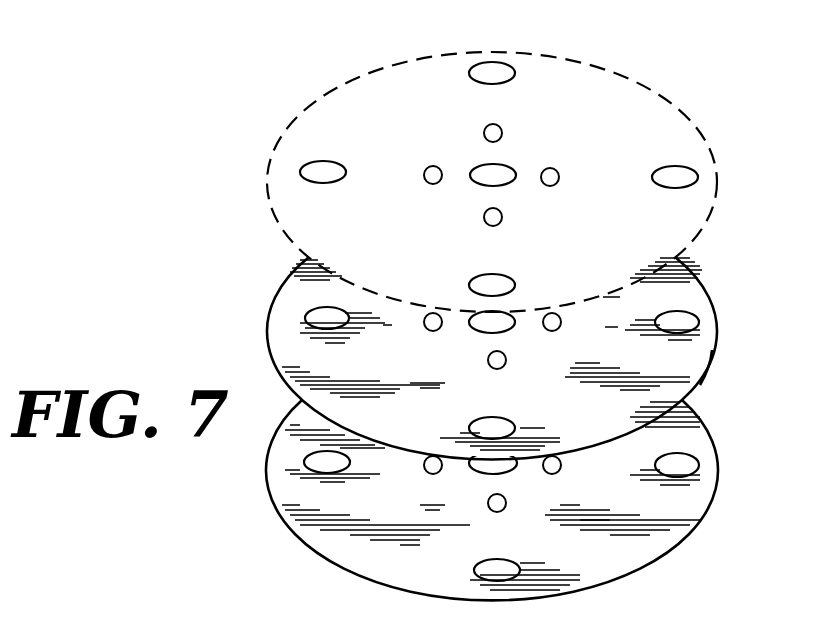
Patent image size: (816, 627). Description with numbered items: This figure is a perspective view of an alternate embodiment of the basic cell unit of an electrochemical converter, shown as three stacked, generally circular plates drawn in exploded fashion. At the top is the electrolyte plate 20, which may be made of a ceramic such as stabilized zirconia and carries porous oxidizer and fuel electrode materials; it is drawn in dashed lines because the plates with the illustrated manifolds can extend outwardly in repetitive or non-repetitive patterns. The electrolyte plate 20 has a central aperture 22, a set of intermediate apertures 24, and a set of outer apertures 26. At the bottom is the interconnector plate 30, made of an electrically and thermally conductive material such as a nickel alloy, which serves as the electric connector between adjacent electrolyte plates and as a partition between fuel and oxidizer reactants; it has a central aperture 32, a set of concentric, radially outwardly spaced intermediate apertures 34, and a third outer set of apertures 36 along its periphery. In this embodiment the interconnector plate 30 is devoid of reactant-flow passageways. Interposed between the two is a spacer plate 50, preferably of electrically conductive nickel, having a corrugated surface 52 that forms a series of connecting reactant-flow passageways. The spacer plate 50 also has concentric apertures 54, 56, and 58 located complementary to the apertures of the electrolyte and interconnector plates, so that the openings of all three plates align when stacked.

The electrolyte plate 20 is at (667, 86).
The central aperture 22 is at (499, 173).
The intermediate apertures 24 is at (553, 173).
The outer apertures 26 is at (488, 68).
The interconnector plate 30 is at (728, 449).
The central aperture 32 is at (504, 471).
The intermediate apertures 34 is at (430, 471).
The outer apertures 36 is at (490, 568).
The spacer plate 50 is at (726, 322).
The corrugated surface 52 is at (707, 367).
The central aperture of spacer plate 54 is at (482, 325).
The intermediate apertures of spacer plate 56 is at (506, 360).
The outer apertures of spacer plate 58 is at (318, 318).